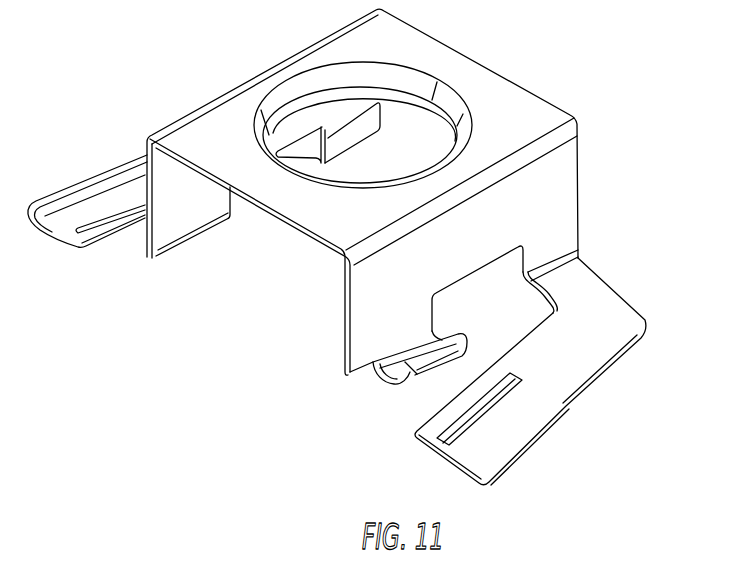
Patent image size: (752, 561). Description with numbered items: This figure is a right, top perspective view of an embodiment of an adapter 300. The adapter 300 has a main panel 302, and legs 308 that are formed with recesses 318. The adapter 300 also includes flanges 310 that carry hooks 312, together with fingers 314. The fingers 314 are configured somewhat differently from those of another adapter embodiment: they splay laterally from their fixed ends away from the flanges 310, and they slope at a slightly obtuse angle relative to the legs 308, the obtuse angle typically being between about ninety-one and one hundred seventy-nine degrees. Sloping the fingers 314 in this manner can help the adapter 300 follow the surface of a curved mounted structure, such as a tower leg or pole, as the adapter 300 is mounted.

The adapter 300 is at (364, 247).
The main panel 302 is at (500, 95).
The leg 308 is at (557, 172).
The flange 310 is at (383, 370).
The hook 312 is at (403, 381).
The finger 314 is at (609, 292).
The recess 318 is at (578, 250).